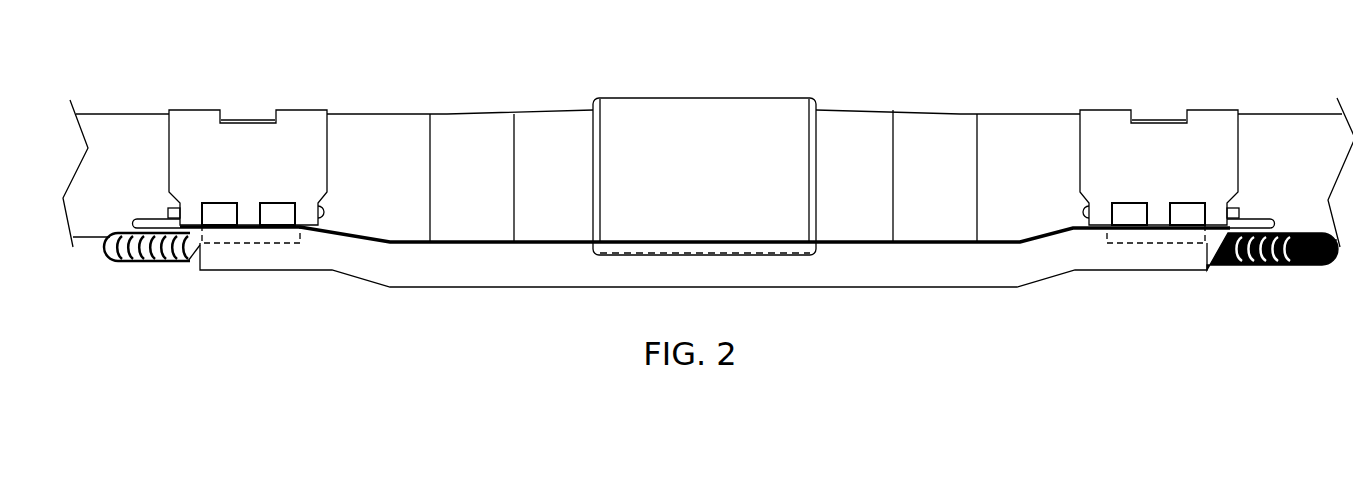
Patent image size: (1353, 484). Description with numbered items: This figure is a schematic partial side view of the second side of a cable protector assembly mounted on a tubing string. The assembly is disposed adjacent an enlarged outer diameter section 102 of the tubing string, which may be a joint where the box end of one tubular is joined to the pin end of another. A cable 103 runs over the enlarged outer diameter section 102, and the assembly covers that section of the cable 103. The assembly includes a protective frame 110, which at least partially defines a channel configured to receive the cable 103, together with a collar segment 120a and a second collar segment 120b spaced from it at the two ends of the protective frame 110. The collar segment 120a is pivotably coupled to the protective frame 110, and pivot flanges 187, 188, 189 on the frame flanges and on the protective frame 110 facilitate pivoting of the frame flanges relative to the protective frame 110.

The enlarged outer diameter section 102 is at (713, 135).
The cable 103 is at (1257, 266).
The protective frame 110 is at (505, 262).
The collar segment 120a is at (300, 131).
The second collar segment 120b is at (1215, 140).
The pivot flange 187 is at (248, 212).
The pivot flange 188 is at (1103, 213).
The pivot flange 189 is at (273, 215).